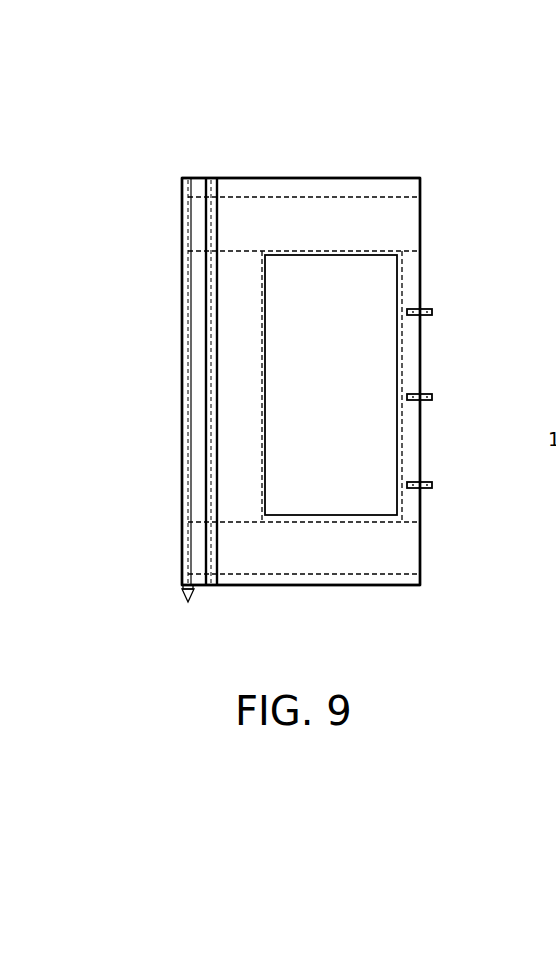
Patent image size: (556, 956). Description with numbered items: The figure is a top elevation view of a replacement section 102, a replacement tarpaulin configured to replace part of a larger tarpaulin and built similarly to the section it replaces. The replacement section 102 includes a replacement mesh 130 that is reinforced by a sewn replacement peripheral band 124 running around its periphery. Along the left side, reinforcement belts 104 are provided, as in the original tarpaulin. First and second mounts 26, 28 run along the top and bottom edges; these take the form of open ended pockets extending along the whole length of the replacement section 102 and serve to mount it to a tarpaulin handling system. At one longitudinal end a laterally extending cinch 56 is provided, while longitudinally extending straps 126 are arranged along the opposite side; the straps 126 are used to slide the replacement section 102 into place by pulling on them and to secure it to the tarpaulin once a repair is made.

The replacement section 102 is at (288, 76).
The reinforcement belts 104 is at (186, 178).
The first mount 26 is at (370, 188).
The second mount 28 is at (360, 580).
The straps 126 is at (430, 307).
The replacement mesh 130 is at (362, 384).
The replacement peripheral band 124 is at (223, 561).
The cinch 56 is at (187, 597).